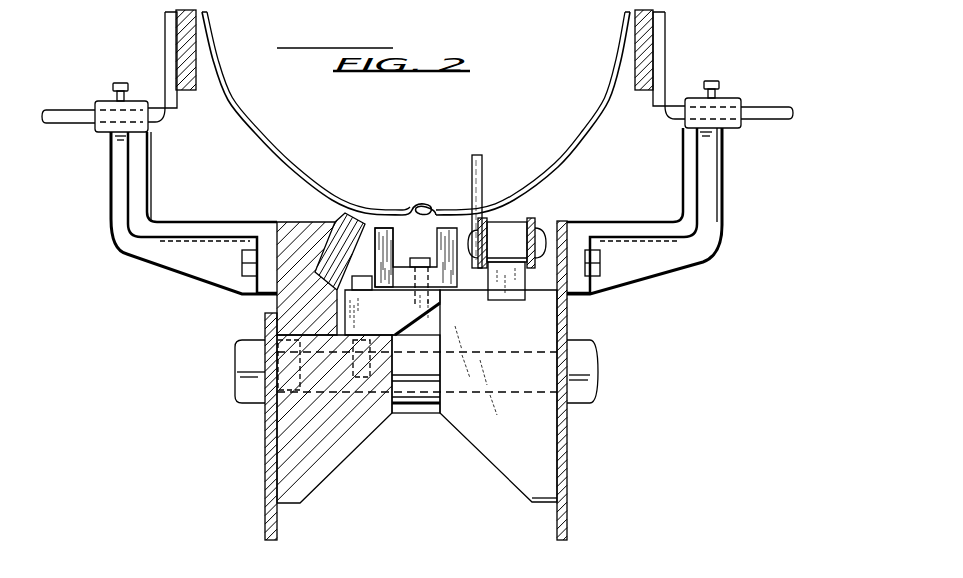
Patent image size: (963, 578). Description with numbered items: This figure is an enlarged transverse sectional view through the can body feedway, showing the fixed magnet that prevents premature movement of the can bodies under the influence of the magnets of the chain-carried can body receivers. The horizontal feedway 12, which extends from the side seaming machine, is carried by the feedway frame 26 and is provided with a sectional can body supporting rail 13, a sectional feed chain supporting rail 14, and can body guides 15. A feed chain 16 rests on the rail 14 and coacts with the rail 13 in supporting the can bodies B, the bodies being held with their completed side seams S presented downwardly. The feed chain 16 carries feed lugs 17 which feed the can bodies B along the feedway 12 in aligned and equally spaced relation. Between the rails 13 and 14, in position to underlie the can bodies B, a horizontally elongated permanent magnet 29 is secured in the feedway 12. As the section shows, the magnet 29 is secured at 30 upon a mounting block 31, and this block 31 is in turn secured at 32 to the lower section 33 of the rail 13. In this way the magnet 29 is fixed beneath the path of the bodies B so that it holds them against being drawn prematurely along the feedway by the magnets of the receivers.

The horizontal feedway 12 is at (314, 213).
The sectional can body supporting rail 13 is at (314, 375).
The sectional feed chain supporting rail 14 is at (518, 289).
The can body guides 15 is at (186, 37).
The feed chain 16 is at (533, 209).
The feed lugs 17 is at (482, 170).
The feedway frame 26 is at (268, 462).
The permanent magnet 29 is at (383, 229).
The securing means 30 is at (425, 256).
The mounting block 31 is at (413, 324).
The securing means 32 is at (363, 288).
The lower section of the rail 33 is at (350, 440).
The can bodies B is at (244, 126).
The completed side seams S is at (424, 209).